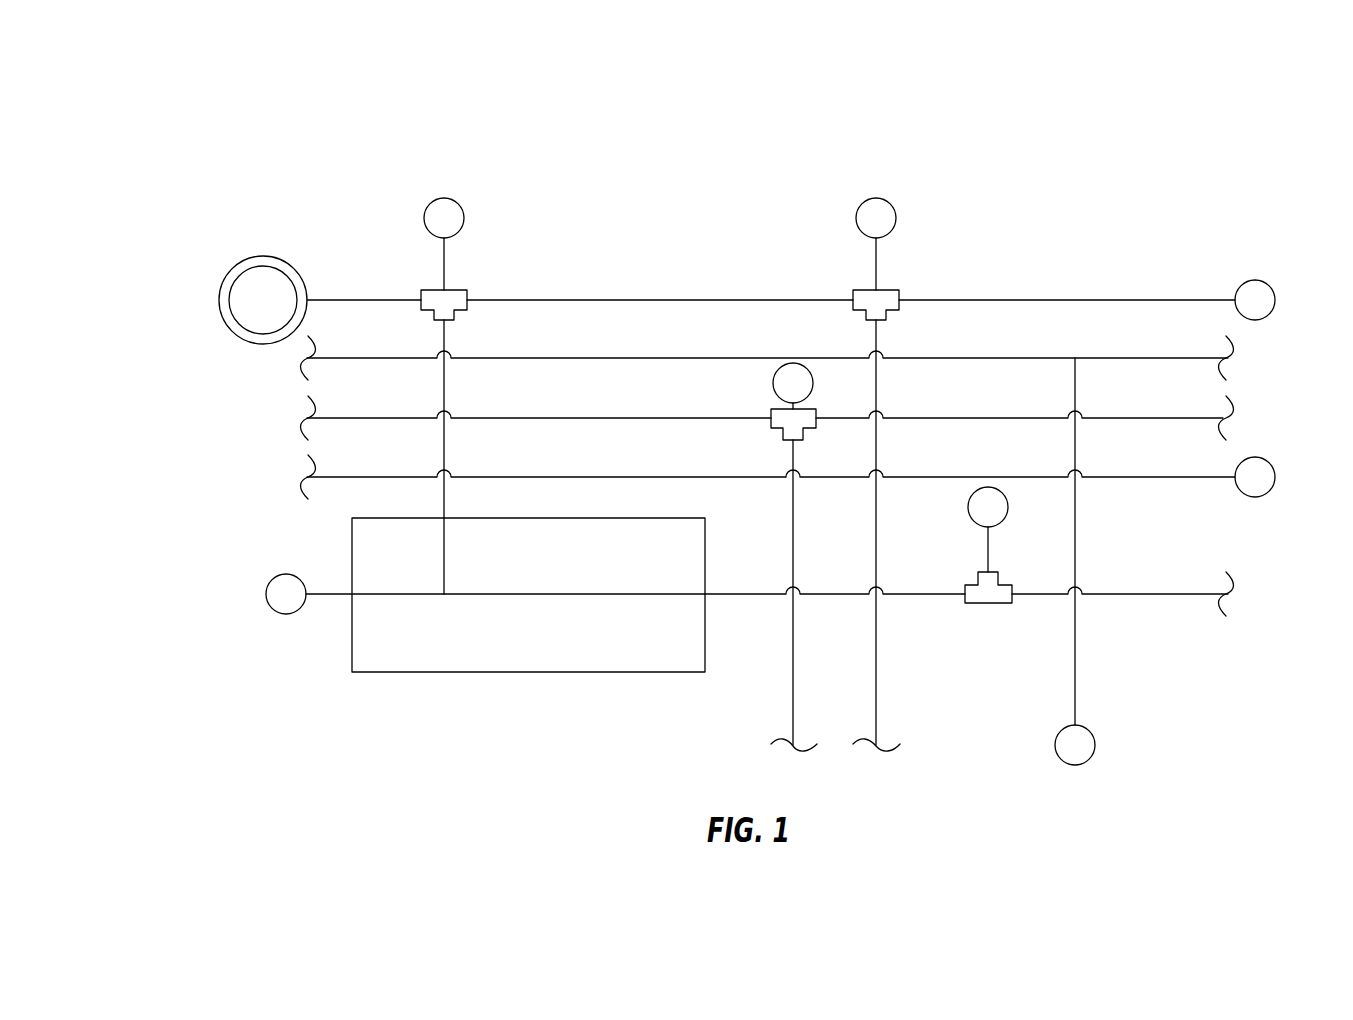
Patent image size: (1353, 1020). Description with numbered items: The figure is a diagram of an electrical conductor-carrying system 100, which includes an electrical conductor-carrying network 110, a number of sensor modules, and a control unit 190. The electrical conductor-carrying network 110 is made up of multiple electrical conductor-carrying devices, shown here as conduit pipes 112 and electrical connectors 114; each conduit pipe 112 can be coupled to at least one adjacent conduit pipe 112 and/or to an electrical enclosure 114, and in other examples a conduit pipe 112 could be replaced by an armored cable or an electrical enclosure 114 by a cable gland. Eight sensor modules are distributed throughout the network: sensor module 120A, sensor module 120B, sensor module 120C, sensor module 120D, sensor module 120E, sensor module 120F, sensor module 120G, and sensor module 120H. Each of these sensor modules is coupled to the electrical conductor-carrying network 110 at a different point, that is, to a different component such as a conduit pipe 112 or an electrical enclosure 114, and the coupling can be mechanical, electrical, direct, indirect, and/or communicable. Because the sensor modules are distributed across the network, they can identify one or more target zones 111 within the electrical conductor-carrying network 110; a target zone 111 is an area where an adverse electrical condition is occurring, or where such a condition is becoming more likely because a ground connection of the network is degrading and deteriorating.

The electrical conductor-carrying system 100 is at (233, 97).
The control unit 190 is at (264, 252).
The electrical conductor-carrying network 110 is at (623, 268).
The conduit pipe 112 is at (707, 357).
The electrical connector 114 is at (466, 290).
The sensor module 120A is at (444, 192).
The sensor module 120B is at (286, 568).
The sensor module 120C is at (766, 386).
The sensor module 120D is at (876, 192).
The sensor module 120E is at (961, 507).
The sensor module 120F is at (1255, 274).
The sensor module 120G is at (1255, 451).
The sensor module 120H is at (1104, 745).
The target zone 111 is at (505, 680).